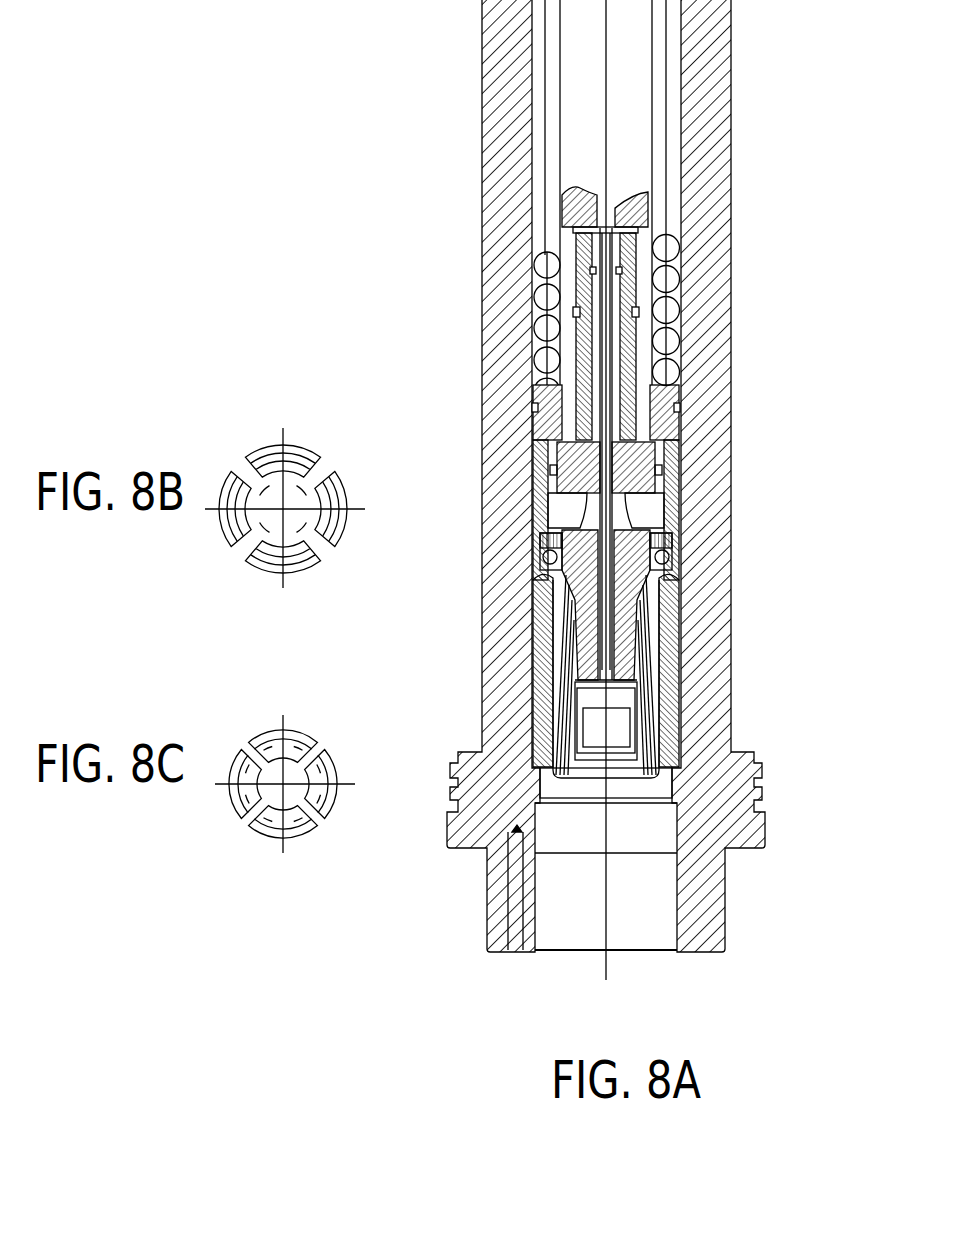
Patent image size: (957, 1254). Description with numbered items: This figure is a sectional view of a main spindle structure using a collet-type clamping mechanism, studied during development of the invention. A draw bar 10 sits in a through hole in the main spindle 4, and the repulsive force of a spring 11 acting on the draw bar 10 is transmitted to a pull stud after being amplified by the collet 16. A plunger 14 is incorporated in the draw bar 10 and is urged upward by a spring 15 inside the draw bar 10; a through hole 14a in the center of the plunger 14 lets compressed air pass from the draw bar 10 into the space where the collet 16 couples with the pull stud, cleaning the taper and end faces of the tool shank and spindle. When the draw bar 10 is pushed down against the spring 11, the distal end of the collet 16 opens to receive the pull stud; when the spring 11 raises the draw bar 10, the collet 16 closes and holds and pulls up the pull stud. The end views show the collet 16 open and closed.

In FIG. 8A, the main spindle 4 is at (707, 913).
In FIG. 8A, the draw bar 10 is at (648, 192).
In FIG. 8A, the spring 11 is at (623, 283).
In FIG. 8A, the plunger 14 is at (628, 307).
In FIG. 8A, the through hole 14a is at (608, 518).
In FIG. 8A, the spring 15 is at (620, 440).
In FIG. 8A, the collet 16 is at (647, 730).
In FIG. 8B, the collet 16 is at (303, 442).
In FIG. 8C, the collet 16 is at (305, 732).